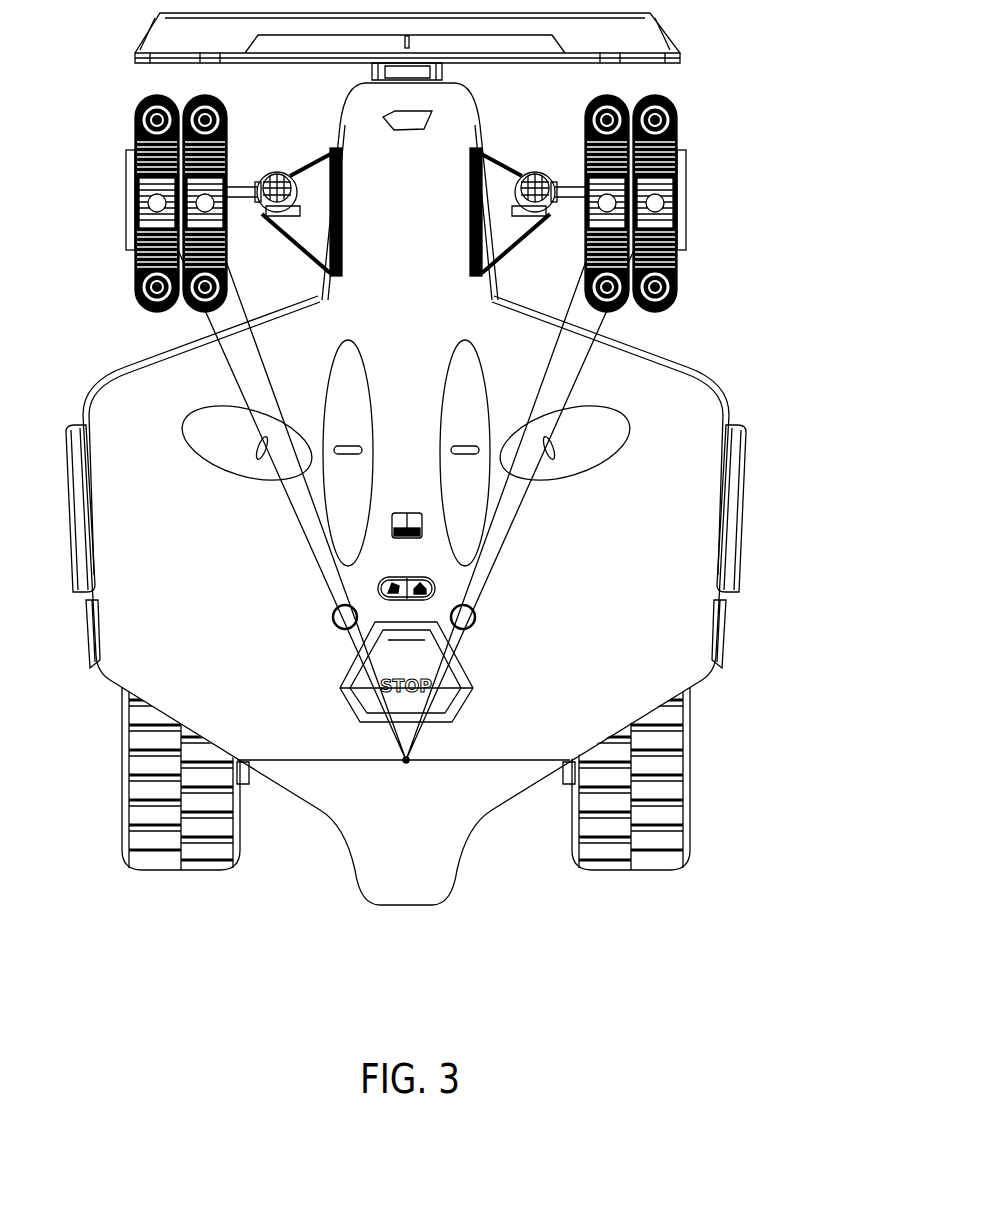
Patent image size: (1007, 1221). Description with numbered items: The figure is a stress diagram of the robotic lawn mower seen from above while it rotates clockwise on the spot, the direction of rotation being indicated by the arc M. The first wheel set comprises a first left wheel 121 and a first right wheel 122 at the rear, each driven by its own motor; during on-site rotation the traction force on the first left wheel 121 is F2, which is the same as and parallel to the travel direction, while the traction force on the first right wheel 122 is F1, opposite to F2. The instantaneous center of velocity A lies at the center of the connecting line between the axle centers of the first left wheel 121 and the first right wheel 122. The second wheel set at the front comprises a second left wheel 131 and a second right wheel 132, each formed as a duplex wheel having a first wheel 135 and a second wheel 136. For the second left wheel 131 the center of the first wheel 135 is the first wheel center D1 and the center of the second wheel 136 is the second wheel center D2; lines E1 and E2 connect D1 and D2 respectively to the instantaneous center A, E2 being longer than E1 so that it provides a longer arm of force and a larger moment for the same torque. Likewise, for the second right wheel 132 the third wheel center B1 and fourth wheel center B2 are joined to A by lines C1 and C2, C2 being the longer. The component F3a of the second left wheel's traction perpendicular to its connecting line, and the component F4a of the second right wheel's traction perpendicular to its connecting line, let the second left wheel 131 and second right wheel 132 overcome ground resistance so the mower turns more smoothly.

The first left wheel 121 is at (178, 870).
The first right wheel 122 is at (677, 872).
The second left wheel 131 is at (97, 173).
The second right wheel 132 is at (715, 155).
The first wheel 135 is at (610, 97).
The second wheel 136 is at (683, 127).
The third wheel center B1 is at (587, 167).
The fourth wheel center B2 is at (714, 212).
The connecting line C1 is at (507, 487).
The connecting line C2 is at (587, 373).
The first wheel center D1 is at (226, 204).
The second wheel center D2 is at (160, 206).
The connecting line E1 is at (270, 393).
The connecting line E2 is at (308, 537).
The traction force F1 is at (633, 762).
The traction force F2 is at (178, 870).
The component force F3a is at (205, 190).
The component force F4a is at (660, 213).
The instantaneous center of velocity A is at (407, 788).
The direction of rotation M is at (787, 313).